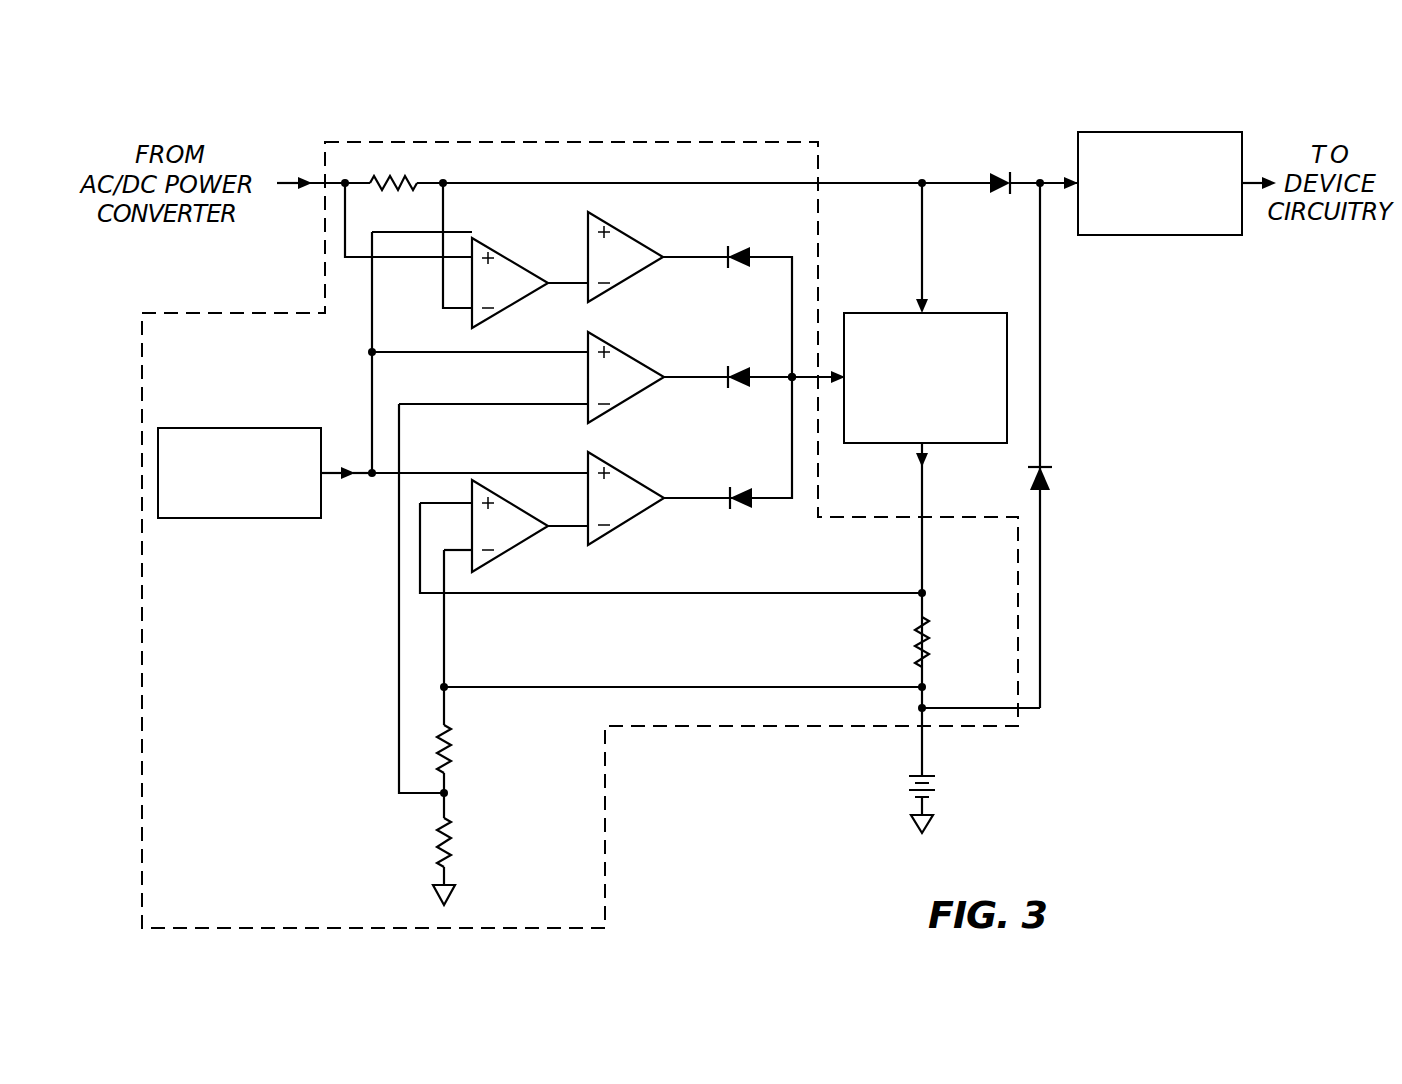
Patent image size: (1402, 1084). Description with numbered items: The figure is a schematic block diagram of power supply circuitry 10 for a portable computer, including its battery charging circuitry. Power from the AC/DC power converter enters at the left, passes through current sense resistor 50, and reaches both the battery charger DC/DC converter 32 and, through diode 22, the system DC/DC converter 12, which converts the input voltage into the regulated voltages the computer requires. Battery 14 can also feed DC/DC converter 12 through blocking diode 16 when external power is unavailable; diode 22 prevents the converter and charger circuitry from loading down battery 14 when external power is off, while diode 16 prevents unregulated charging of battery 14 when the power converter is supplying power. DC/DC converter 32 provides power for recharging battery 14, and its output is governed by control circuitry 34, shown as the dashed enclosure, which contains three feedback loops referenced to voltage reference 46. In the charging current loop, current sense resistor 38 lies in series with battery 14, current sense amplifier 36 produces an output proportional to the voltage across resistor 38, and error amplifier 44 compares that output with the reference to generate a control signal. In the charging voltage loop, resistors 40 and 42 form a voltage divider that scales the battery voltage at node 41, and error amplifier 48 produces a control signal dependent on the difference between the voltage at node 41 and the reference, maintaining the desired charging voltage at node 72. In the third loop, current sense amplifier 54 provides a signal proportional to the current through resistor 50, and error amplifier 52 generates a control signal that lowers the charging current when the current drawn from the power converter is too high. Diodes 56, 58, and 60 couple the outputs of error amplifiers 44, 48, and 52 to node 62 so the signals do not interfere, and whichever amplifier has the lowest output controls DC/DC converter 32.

The power supply circuitry 10 is at (1130, 650).
The DC/DC converter 12 is at (1142, 132).
The battery 14 is at (932, 775).
The blocking diode 16 is at (1052, 478).
The diode 22 is at (998, 175).
The battery charger DC/DC converter 32 is at (890, 313).
The control circuitry 34 is at (606, 770).
The current sense amplifier 36 is at (505, 550).
The current sense resistor 38 is at (935, 632).
The resistor 40 is at (455, 740).
The node 41 is at (448, 793).
The resistor 42 is at (451, 830).
The error amplifier 44 is at (630, 526).
The voltage reference 46 is at (222, 428).
The error amplifier 48 is at (630, 404).
The current sense resistor 50 is at (398, 176).
The error amplifier 52 is at (630, 233).
The current sense amplifier 54 is at (514, 305).
The diode 56 is at (740, 510).
The diode 58 is at (736, 368).
The diode 60 is at (748, 250).
The node 62 is at (790, 382).
The node 72 is at (930, 706).